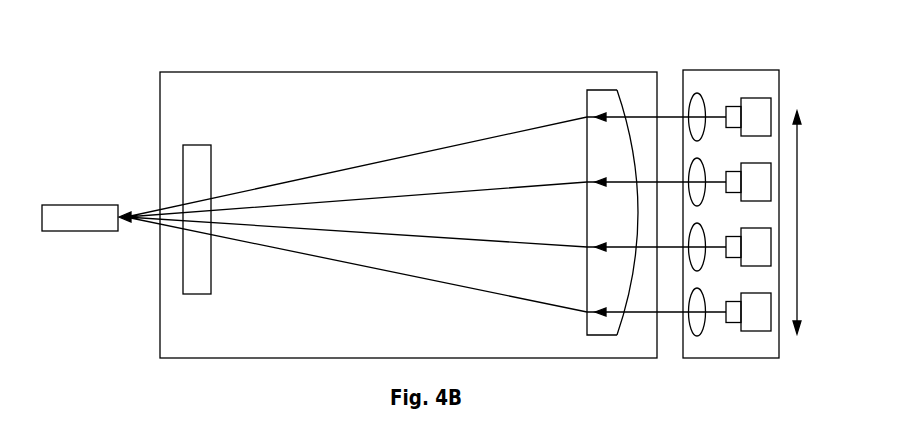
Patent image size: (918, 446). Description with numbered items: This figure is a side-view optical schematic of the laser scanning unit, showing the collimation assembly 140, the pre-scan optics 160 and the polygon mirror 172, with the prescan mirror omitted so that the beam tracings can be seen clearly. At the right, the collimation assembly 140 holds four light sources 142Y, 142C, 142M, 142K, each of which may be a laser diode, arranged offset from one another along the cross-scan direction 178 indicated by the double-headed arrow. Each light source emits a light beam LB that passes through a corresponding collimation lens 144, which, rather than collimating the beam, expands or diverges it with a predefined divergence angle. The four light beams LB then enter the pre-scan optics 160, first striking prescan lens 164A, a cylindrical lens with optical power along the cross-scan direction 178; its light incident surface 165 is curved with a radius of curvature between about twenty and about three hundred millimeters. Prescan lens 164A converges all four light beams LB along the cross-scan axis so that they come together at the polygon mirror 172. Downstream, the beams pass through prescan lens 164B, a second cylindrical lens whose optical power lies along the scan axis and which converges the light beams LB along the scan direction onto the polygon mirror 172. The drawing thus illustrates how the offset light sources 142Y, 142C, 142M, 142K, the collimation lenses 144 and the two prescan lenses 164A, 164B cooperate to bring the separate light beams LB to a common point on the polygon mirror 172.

The pre-scan optics 160 is at (408, 215).
The prescan lens 164B is at (193, 145).
The polygon mirror 172 is at (63, 205).
The light beams LB is at (538, 127).
The prescan lens 164A is at (622, 199).
The light incident surface 165 is at (623, 323).
The collimation assembly 140 is at (731, 214).
The collimation lens 144 is at (697, 92).
The light source 142Y is at (757, 97).
The light source 142C is at (758, 162).
The light source 142M is at (758, 227).
The light source 142K is at (758, 292).
The cross-scan direction 178 is at (802, 312).